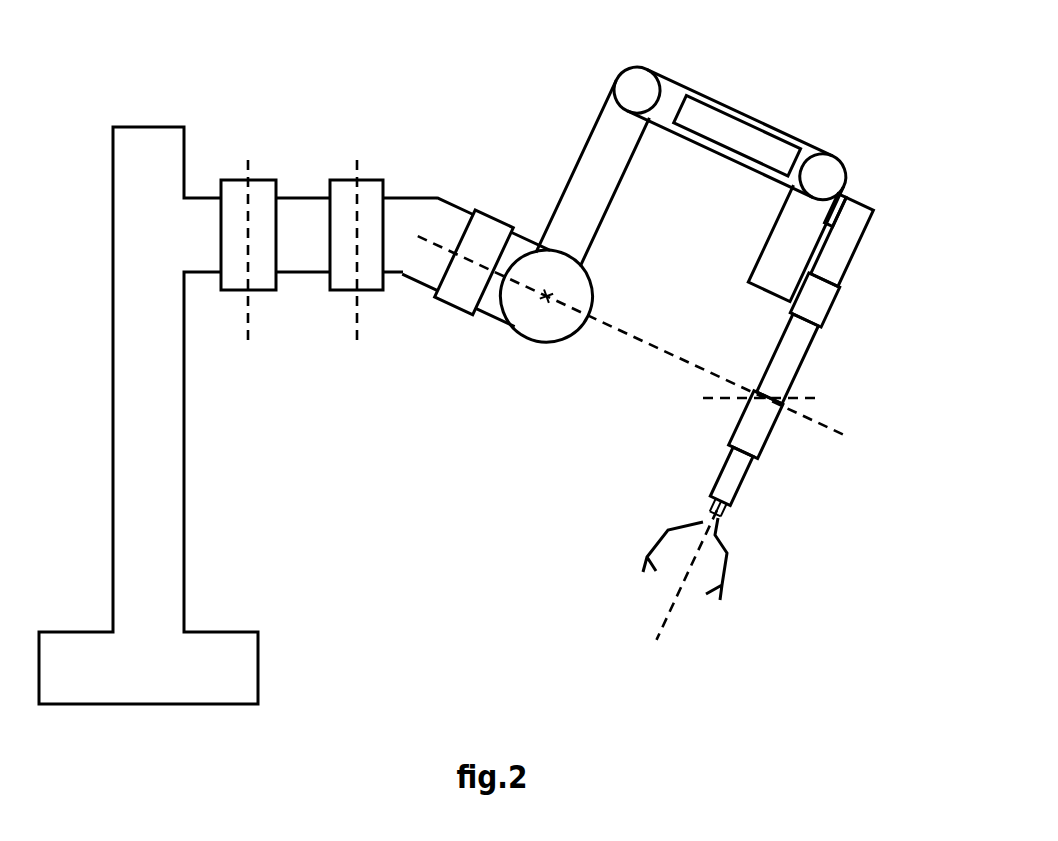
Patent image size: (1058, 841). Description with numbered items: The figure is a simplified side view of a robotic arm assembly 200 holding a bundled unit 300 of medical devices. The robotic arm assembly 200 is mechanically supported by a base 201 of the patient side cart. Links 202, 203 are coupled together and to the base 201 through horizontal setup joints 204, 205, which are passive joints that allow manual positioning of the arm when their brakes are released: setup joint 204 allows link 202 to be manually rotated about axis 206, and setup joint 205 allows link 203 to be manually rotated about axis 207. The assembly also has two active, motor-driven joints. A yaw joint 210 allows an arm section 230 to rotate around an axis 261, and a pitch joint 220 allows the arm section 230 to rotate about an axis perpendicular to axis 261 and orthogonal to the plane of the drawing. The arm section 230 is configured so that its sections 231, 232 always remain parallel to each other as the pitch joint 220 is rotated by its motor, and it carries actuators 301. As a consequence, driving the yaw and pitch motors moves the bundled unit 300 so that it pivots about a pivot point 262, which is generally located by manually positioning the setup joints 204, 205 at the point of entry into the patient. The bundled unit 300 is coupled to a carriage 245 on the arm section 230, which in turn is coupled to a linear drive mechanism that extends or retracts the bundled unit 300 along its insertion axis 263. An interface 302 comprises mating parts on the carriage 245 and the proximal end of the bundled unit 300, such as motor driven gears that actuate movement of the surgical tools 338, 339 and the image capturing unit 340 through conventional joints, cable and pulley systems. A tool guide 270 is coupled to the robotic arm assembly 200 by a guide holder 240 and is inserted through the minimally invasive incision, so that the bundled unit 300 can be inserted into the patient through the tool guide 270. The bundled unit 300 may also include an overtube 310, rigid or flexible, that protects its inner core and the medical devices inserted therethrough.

The robotic arm assembly 200 is at (454, 66).
The base 201 is at (216, 552).
The link 202 is at (302, 284).
The link 203 is at (441, 191).
The setup joint 204 is at (273, 177).
The setup joint 205 is at (380, 177).
The axis 206 is at (243, 313).
The axis 207 is at (358, 313).
The yaw joint 210 is at (501, 211).
The pitch joint 220 is at (521, 336).
The arm section 230 is at (741, 97).
The actuators 301 is at (766, 124).
The section 231 is at (612, 198).
The section 232 is at (780, 210).
The carriage 245 is at (847, 189).
The interface 302 is at (857, 195).
The guide holder 240 is at (845, 299).
The tool guide 270 is at (814, 353).
The axis 261 is at (846, 422).
The pivot point 262 is at (759, 391).
The insertion axis 263 is at (655, 614).
The bundled unit 300 is at (698, 452).
The overtube 310 is at (712, 478).
The surgical tool 338 is at (645, 546).
The surgical tool 339 is at (737, 573).
The image capturing unit 340 is at (730, 521).